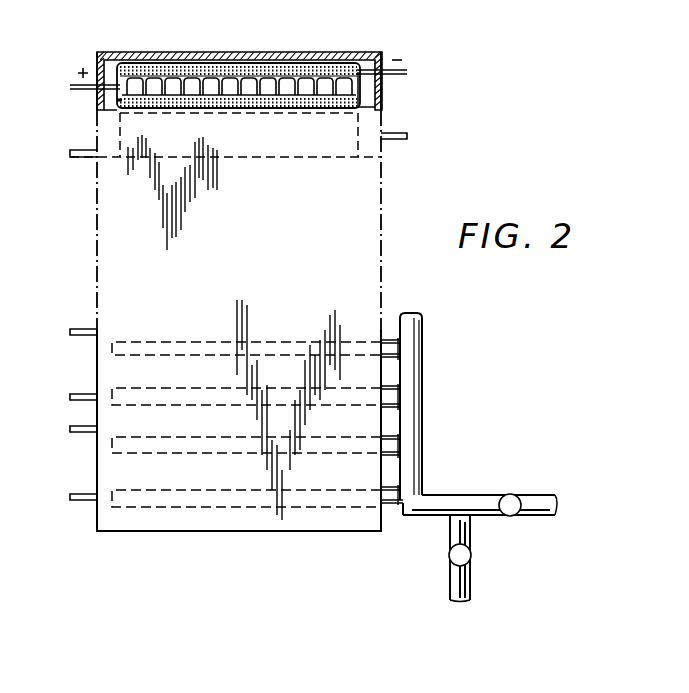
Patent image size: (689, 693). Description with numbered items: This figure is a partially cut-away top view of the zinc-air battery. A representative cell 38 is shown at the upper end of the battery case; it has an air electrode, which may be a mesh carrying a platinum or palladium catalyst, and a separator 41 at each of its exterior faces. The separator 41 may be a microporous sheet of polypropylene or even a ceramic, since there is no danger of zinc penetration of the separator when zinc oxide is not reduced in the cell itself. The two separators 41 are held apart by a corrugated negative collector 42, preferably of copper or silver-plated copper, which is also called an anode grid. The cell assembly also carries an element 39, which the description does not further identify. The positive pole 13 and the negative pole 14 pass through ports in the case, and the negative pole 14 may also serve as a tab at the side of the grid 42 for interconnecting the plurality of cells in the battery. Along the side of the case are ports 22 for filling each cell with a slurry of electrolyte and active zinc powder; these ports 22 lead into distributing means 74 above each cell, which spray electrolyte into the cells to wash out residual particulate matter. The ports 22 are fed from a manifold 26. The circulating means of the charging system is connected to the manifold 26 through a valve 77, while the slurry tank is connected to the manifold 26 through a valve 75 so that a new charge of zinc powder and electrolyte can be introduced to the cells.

The positive pole 13 is at (68, 74).
The negative pole 14 is at (402, 78).
The ports 22 is at (97, 462).
The manifold 26 is at (421, 380).
The cell 38 is at (290, 62).
The insulation layer 39 is at (340, 70).
The separator 41 is at (117, 101).
The corrugated negative collector 42 is at (165, 66).
The distributing means 74 is at (181, 348).
The valve 75 is at (449, 556).
The valve 77 is at (515, 482).